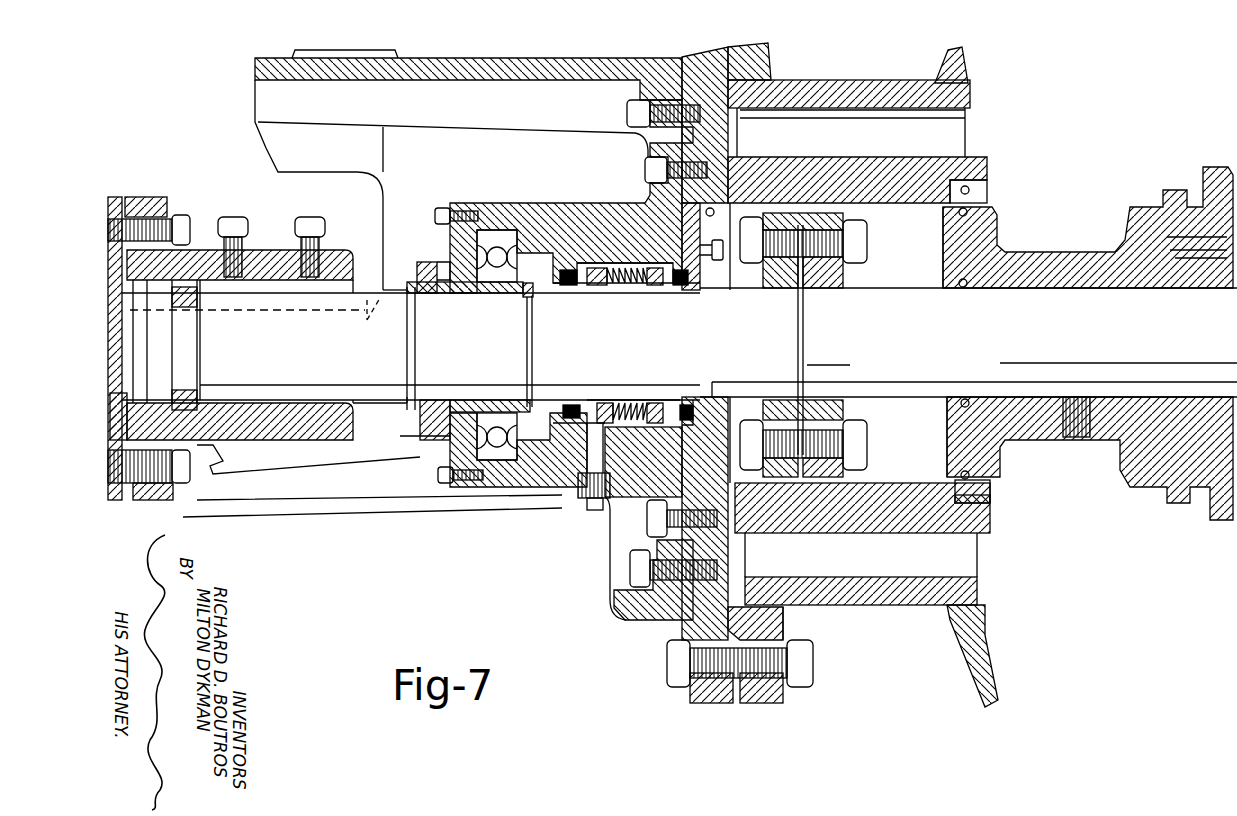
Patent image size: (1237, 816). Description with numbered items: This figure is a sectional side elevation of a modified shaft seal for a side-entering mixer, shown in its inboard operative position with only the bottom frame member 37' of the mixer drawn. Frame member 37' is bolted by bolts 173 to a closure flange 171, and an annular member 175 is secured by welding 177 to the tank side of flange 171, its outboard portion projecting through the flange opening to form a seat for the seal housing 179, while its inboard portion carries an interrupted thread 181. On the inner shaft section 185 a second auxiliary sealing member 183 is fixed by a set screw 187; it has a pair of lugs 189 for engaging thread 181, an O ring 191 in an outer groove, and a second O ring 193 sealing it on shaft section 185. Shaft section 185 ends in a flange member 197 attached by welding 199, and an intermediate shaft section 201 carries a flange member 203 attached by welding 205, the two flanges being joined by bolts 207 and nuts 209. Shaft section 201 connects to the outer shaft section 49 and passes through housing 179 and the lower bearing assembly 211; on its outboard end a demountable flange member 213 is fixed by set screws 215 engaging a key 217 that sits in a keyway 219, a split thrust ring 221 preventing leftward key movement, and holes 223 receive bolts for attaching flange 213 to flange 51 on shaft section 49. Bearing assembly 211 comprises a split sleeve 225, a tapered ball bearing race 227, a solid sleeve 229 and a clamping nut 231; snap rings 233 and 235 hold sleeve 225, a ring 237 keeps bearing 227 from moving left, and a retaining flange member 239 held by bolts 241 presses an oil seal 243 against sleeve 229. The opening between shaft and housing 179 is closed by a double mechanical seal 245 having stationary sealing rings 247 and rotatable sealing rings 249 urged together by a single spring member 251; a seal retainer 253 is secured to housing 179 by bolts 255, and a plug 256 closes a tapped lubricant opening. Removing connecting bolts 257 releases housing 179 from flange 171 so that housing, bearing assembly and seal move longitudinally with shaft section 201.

The bottom frame member 37' is at (468, 162).
The outer shaft section 49 is at (122, 312).
The flange 51 is at (115, 197).
The closure member 171 is at (695, 63).
The bolts 173 is at (627, 112).
The annular member 175 is at (868, 170).
The welding 177 is at (742, 153).
The housing 179 is at (562, 203).
The interrupted thread 181 is at (982, 190).
The second auxiliary sealing member 183 is at (1043, 263).
The inner shaft section 185 is at (898, 297).
The set screw 187 is at (1070, 430).
The lugs 189 is at (1170, 190).
The O ring 191 is at (975, 478).
The second O ring 193 is at (961, 293).
The flange member 197 is at (828, 283).
The welding 199 is at (853, 403).
The intermediate shaft section 201 is at (393, 390).
The flange member 203 is at (778, 280).
The welding 205 is at (770, 395).
The bolts 207 is at (758, 237).
The nuts 209 is at (867, 232).
The shaft lower bearing assembly 211 is at (416, 245).
The demountable flange member 213 is at (320, 440).
The set screws 215 is at (310, 217).
The key 217 is at (718, 345).
The keyway 219 is at (367, 313).
The split thrust ring 221 is at (197, 397).
The holes 223 is at (147, 197).
The split sleeve 225 is at (483, 293).
The tapered ball bearing race 227 is at (507, 275).
The solid sleeve 229 is at (450, 407).
The clamping nut 231 is at (423, 432).
The snap ring 233 is at (530, 295).
The snap ring 235 is at (407, 397).
The ring 237 is at (490, 217).
The retaining flange member 239 is at (460, 485).
The bolts 241 is at (440, 207).
The oil seal 243 is at (452, 270).
The mechanical seal 245 is at (632, 431).
The stationary sealing rings 247 is at (680, 290).
The rotatable sealing rings 249 is at (663, 400).
The spring member 251 is at (623, 293).
The seal retainer 253 is at (700, 398).
The bolts 255 is at (718, 262).
The plug 256 is at (588, 511).
The connecting bolts 257 is at (643, 165).